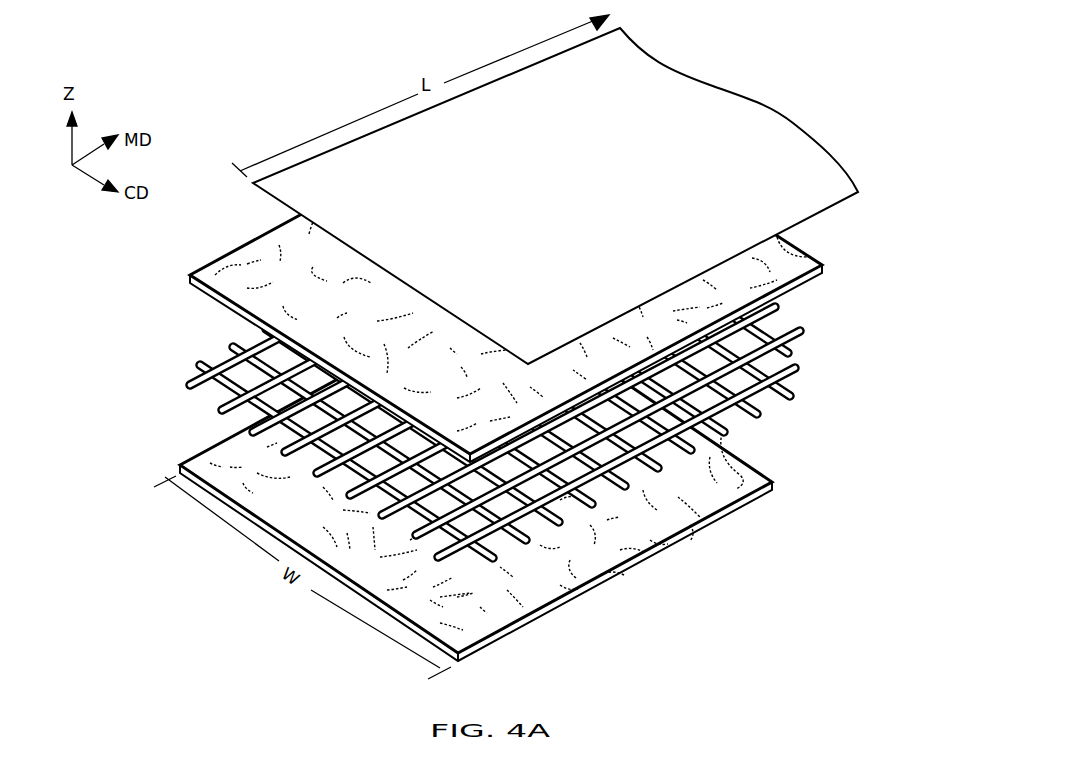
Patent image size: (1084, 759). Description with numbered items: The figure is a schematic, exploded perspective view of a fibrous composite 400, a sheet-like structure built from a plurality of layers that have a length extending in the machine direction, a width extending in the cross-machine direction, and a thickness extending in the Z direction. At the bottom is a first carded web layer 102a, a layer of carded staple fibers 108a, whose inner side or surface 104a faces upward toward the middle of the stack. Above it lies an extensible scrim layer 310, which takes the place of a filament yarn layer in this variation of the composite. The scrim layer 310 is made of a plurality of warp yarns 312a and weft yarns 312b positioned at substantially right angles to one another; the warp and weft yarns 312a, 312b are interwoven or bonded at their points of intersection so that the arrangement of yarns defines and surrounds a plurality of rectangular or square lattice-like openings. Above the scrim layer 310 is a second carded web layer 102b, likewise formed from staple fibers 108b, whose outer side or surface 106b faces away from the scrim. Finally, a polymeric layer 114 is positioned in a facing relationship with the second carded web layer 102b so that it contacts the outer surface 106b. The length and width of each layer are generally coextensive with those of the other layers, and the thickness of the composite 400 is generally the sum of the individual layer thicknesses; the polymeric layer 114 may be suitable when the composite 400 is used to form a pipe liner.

The composite 400 is at (909, 128).
The polymeric layer 114 is at (872, 195).
The second carded web layer 102b is at (463, 272).
The second, outer side or surface 106b is at (302, 292).
The staple fibers 108b is at (248, 261).
The extensible scrim layer 310 is at (498, 359).
The warp yarns 312a is at (808, 332).
The weft yarns 312b is at (797, 399).
The first carded web layer 102a is at (467, 477).
The first, inner side or surface 104a is at (280, 502).
The staple fibers 108a is at (744, 481).